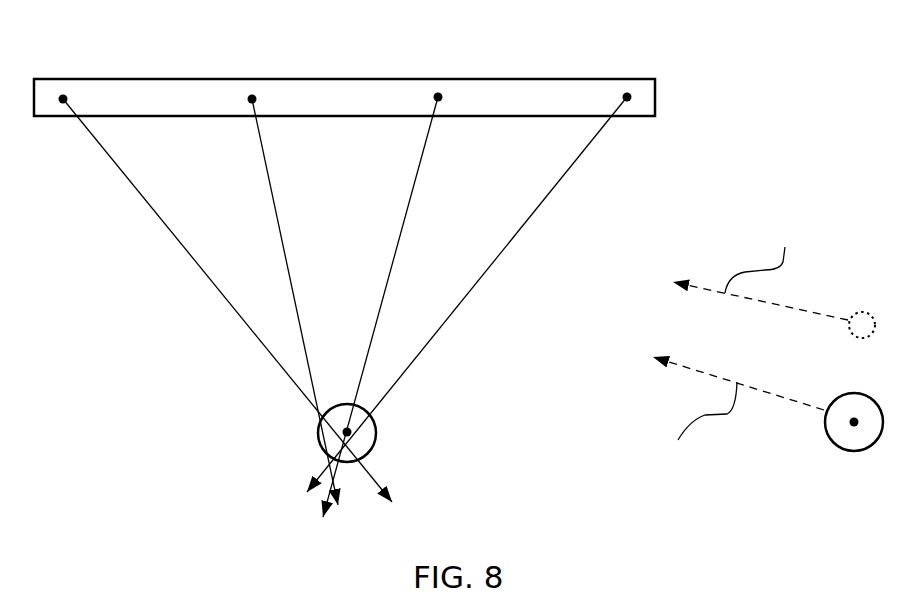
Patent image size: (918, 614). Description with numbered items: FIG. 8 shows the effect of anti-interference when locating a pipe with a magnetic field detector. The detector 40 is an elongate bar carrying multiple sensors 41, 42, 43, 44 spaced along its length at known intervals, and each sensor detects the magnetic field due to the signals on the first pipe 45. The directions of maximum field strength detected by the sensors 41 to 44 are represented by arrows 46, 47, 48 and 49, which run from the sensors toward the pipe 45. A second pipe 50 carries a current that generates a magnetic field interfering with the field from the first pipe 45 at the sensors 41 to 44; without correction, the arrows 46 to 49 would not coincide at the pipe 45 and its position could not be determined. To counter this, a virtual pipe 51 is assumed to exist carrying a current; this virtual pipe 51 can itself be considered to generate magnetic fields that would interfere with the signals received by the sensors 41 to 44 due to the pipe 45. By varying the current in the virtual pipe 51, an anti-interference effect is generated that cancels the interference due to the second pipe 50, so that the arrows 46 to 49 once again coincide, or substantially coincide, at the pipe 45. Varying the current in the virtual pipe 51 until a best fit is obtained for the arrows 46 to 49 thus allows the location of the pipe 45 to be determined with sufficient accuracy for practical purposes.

The detector 40 is at (378, 79).
The sensor 41 is at (63, 97).
The sensor 42 is at (252, 97).
The sensor 43 is at (438, 95).
The sensor 44 is at (627, 95).
The pipe 45 is at (376, 430).
The arrow 46 is at (176, 241).
The arrow 47 is at (282, 230).
The arrow 48 is at (409, 205).
The arrow 49 is at (508, 245).
The second pipe 50 is at (848, 452).
The virtual pipe 51 is at (871, 316).